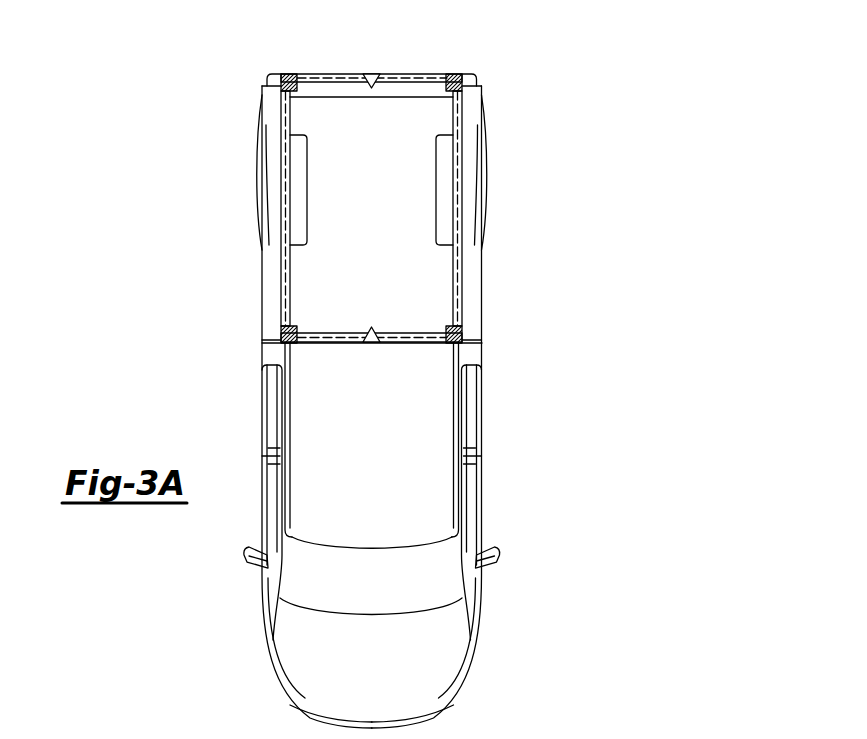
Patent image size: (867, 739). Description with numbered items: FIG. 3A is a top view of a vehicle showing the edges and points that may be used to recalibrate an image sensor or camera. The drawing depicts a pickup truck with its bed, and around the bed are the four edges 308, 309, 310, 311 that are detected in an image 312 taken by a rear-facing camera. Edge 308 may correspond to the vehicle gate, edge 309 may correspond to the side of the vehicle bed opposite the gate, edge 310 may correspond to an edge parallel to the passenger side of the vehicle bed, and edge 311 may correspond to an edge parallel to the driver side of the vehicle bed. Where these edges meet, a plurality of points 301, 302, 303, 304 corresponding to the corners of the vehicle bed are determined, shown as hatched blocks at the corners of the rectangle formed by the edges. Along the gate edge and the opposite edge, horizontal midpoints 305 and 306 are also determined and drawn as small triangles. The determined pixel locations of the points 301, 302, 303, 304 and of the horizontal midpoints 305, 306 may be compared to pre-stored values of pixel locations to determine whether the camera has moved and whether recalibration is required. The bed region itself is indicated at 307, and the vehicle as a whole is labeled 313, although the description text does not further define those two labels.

The point 301 is at (281, 334).
The point 302 is at (462, 334).
The point 303 is at (281, 85).
The point 304 is at (462, 85).
The horizontal midpoint 305 is at (374, 327).
The horizontal midpoint 306 is at (372, 88).
The truck bed 307 is at (332, 262).
The edge 308 is at (330, 73).
The edge 309 is at (333, 337).
The edge 310 is at (283, 115).
The edge 311 is at (459, 270).
The image 312 is at (372, 180).
The vehicle 313 is at (687, 738).